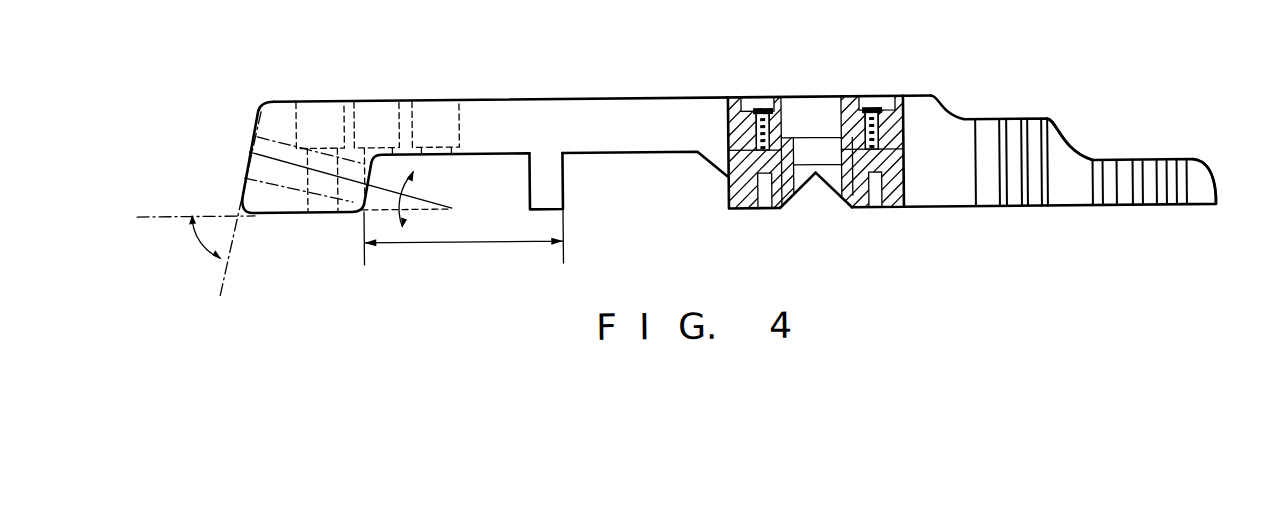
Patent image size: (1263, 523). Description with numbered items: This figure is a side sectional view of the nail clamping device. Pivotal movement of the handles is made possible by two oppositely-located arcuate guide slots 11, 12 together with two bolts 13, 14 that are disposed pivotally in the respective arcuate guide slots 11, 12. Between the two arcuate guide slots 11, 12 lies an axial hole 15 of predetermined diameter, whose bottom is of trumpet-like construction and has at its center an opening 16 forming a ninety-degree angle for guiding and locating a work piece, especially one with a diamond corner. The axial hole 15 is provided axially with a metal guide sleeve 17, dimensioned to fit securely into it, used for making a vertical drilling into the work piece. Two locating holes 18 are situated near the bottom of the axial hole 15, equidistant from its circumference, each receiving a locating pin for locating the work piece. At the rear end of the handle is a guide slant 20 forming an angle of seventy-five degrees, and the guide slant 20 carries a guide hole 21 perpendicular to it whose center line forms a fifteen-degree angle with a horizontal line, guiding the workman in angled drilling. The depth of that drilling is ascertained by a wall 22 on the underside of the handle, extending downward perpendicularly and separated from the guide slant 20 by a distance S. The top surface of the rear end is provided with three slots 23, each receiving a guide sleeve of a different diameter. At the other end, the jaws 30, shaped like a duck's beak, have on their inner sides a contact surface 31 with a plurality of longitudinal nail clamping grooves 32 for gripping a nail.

The arcuate guide slot 11 is at (863, 107).
The arcuate guide slot 12 is at (752, 105).
The bolt 13 is at (872, 112).
The bolt 14 is at (765, 110).
The axial hole 15 is at (812, 125).
The opening 16 is at (828, 203).
The metal guide sleeve 17 is at (788, 205).
The locating hole 18 is at (765, 205).
The guide slant 20 is at (268, 104).
The guide hole 21 is at (275, 176).
The wall 22 is at (553, 193).
The slot 23 is at (323, 128).
The jaw 30 is at (1173, 149).
The contact surface 31 is at (1070, 183).
The nail clamping groove 32 is at (1103, 181).